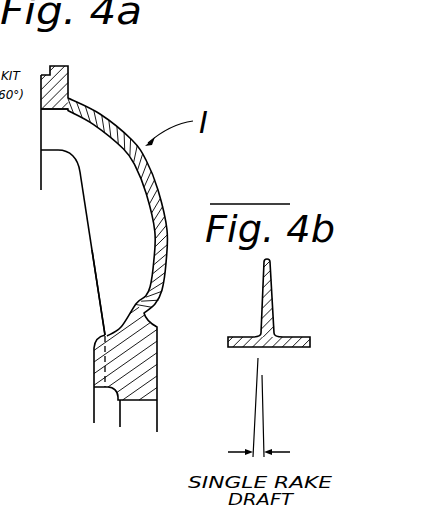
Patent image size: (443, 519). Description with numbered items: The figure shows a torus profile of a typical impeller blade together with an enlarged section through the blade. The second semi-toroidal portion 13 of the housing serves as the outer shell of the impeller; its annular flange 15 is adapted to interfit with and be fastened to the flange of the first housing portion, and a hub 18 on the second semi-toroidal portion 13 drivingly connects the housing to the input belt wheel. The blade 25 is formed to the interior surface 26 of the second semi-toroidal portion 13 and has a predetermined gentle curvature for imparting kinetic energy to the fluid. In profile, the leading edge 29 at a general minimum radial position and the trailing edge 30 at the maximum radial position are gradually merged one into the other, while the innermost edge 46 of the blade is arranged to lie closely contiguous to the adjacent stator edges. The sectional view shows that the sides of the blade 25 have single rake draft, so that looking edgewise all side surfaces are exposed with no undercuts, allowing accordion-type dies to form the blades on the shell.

In FIG. 4A, the annular flange 15 is at (64, 85).
In FIG. 4A, the second semi-toroidal portion 13 is at (101, 118).
In FIG. 4A, the interior surface 26 is at (147, 172).
In FIG. 4A, the trailing edge 30 is at (40, 122).
In FIG. 4A, the innermost edge 46 is at (79, 173).
In FIG. 4A, the blade 25 is at (105, 243).
In FIG. 4B, the blade 25 is at (273, 296).
In FIG. 4A, the leading edge 29 is at (97, 296).
In FIG. 4A, the hub 18 is at (122, 359).